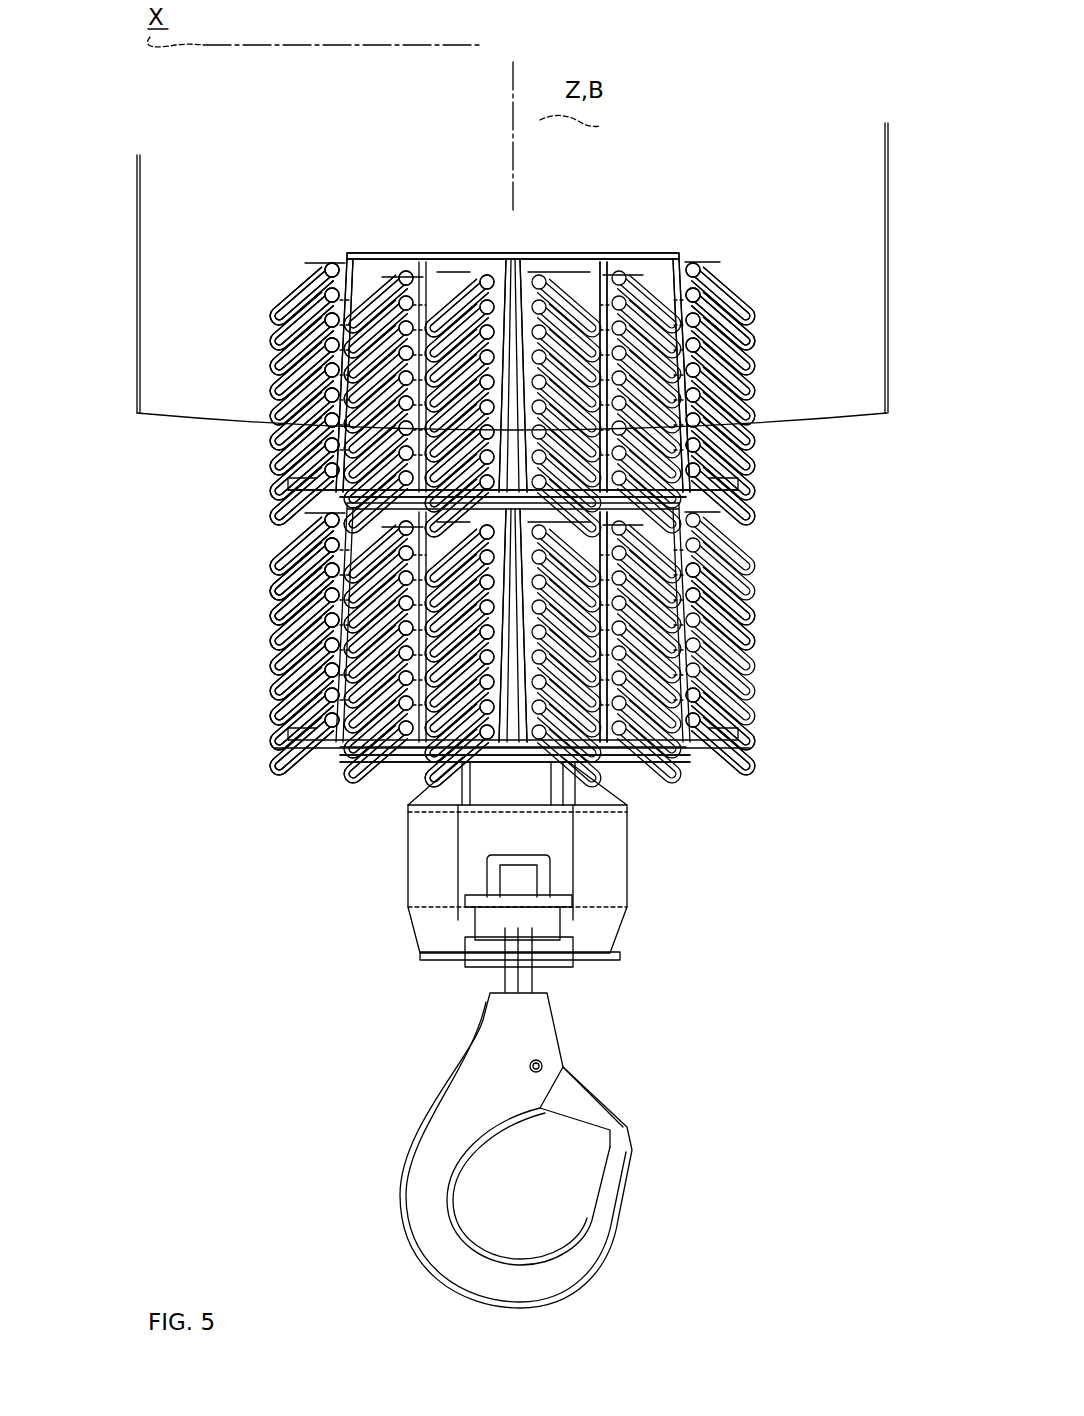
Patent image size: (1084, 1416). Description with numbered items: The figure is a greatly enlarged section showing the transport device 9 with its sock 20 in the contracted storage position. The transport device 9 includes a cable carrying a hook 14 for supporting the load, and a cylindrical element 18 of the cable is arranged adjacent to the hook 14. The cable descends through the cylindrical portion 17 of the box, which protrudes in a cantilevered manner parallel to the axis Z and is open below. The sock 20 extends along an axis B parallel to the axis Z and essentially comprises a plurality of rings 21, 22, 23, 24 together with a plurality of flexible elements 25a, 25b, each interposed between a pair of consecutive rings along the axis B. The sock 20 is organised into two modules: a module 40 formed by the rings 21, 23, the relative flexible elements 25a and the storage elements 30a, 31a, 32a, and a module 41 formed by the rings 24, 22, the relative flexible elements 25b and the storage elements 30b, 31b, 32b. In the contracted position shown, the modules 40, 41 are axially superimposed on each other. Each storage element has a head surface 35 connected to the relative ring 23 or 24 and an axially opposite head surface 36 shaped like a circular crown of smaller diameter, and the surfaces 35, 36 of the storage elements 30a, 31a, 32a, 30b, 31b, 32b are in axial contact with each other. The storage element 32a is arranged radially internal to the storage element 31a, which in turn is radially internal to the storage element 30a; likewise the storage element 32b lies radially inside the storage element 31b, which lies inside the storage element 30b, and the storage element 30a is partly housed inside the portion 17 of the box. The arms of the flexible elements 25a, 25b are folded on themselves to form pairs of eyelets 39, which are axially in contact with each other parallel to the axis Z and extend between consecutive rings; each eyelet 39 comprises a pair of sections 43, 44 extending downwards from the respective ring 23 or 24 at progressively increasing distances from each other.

The transport device 9 is at (826, 303).
The hook 14 is at (612, 1187).
The cylindrical portion 17 is at (137, 226).
The cylindrical element 18 is at (612, 860).
The sock 20 is at (542, 499).
The ring 21 is at (322, 255).
The ring 22 is at (630, 762).
The ring 23 is at (740, 356).
The ring 24 is at (285, 590).
The flexible elements 25a is at (335, 334).
The flexible elements 25b is at (332, 682).
The storage element 30a is at (292, 320).
The storage element 30b is at (322, 682).
The storage element 31a is at (608, 320).
The storage element 31b is at (615, 535).
The storage element 32a is at (510, 318).
The storage element 32b is at (428, 767).
The head surface 35 is at (345, 507).
The head surface 36 is at (513, 329).
The eyelets 39 is at (768, 320).
The module 40 is at (493, 334).
The module 41 is at (498, 680).
The section 43 is at (760, 598).
The section 44 is at (762, 642).